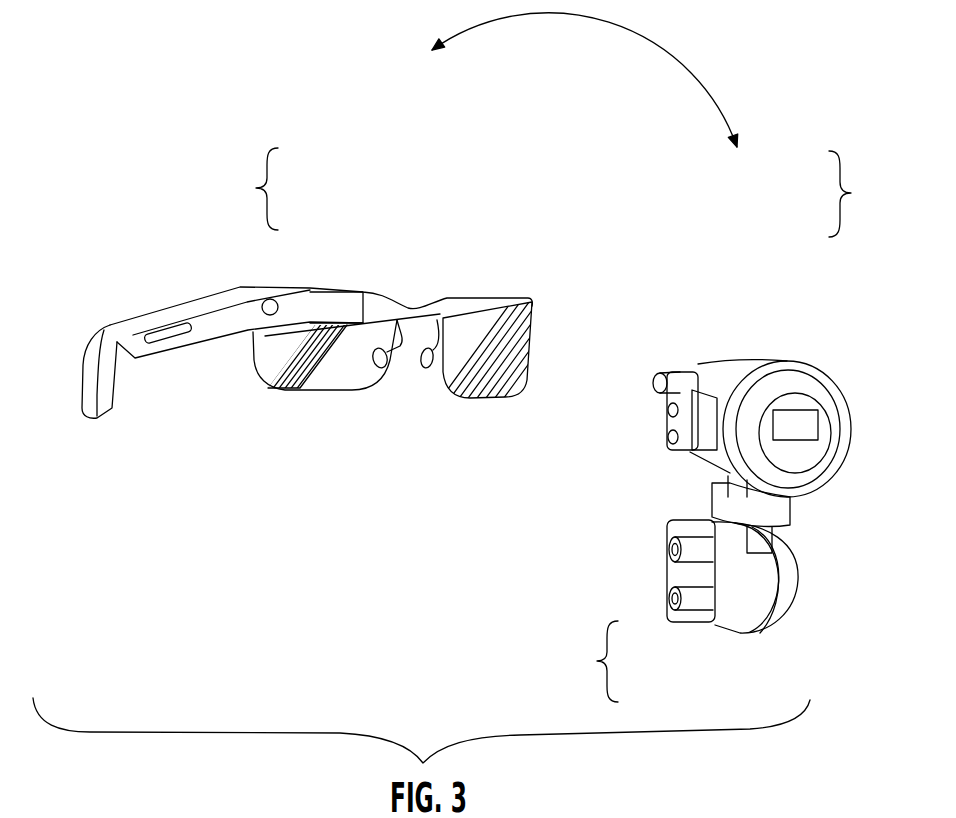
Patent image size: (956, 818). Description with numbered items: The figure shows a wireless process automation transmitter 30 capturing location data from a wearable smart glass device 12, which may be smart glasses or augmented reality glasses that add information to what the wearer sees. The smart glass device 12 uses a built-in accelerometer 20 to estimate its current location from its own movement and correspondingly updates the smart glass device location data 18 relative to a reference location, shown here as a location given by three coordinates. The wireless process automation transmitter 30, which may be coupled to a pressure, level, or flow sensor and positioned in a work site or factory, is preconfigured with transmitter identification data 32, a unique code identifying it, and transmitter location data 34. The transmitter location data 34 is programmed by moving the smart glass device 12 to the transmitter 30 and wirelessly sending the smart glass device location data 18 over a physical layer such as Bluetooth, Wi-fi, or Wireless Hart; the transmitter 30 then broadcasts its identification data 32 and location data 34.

The smart glass device 12 is at (323, 392).
The smart glass device location data 18 is at (312, 189).
The accelerometer 20 is at (170, 330).
The wireless process automation transmitter 30 is at (837, 480).
The transmitter identification data 32 is at (708, 662).
The transmitter location data 34 is at (772, 194).